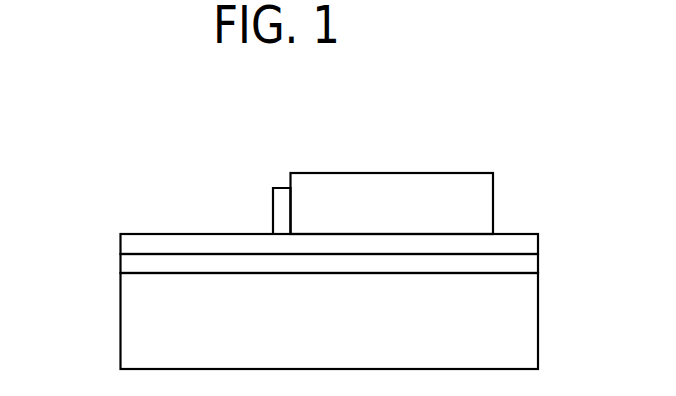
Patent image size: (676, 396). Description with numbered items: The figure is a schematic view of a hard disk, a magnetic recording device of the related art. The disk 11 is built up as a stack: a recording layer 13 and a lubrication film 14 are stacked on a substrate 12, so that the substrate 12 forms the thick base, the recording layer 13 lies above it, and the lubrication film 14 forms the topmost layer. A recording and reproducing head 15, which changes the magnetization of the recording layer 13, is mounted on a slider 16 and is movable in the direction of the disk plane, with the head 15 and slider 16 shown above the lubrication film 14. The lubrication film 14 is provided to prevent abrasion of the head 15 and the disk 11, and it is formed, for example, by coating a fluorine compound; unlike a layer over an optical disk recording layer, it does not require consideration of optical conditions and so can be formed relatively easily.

The disk 11 is at (146, 175).
The substrate 12 is at (120, 298).
The recording layer 13 is at (120, 272).
The lubrication film 14 is at (120, 248).
The recording and reproducing head 15 is at (273, 202).
The slider 16 is at (493, 196).